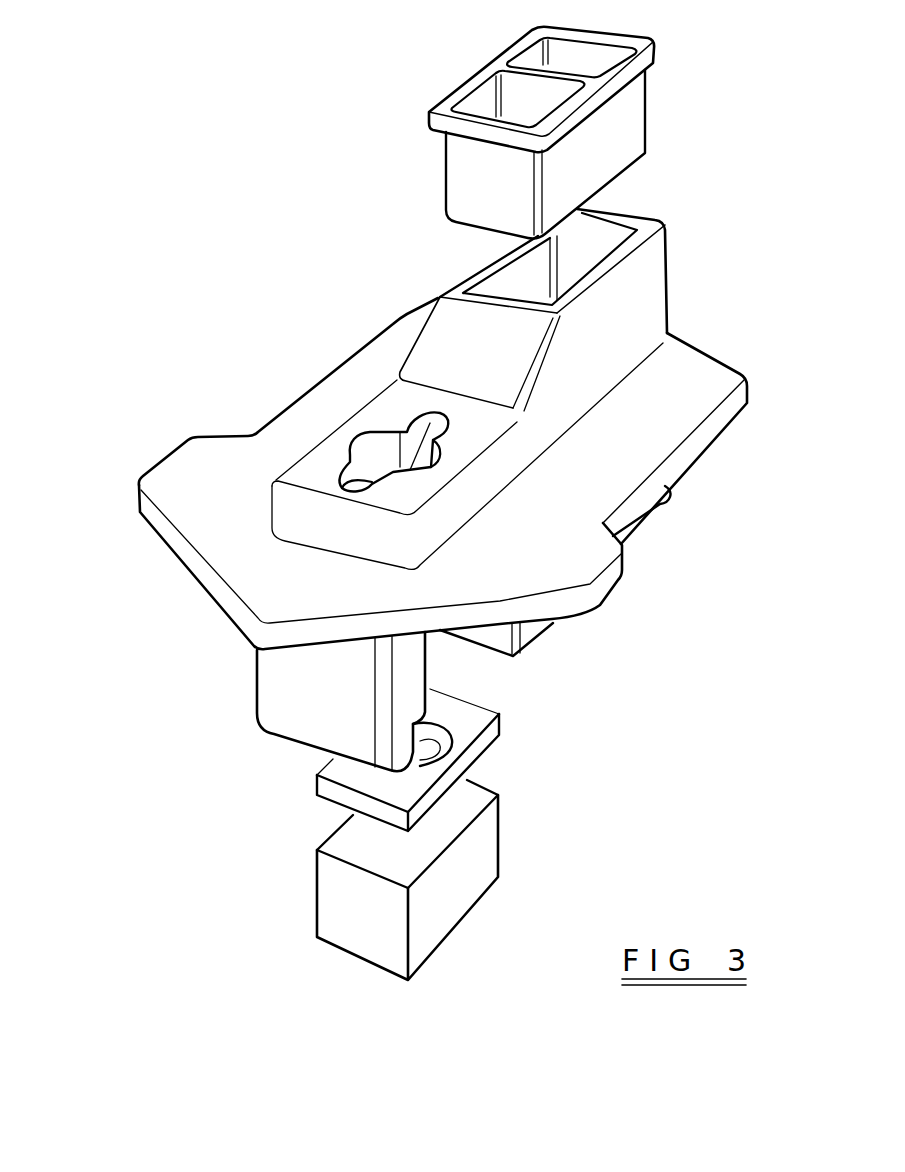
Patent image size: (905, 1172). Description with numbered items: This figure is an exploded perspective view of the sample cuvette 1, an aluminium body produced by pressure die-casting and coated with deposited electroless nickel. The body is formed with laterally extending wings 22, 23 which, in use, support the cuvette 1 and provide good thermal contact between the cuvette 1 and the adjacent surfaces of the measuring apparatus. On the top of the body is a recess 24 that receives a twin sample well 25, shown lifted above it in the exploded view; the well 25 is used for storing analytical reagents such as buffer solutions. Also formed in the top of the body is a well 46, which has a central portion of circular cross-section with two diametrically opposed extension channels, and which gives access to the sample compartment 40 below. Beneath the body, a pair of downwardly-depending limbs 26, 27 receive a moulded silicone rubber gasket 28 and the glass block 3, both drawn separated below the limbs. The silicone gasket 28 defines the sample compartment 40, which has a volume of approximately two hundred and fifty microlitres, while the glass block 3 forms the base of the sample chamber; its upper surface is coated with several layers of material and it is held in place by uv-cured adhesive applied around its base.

The sample cuvette 1 is at (130, 506).
The glass block 3 is at (500, 847).
The laterally extending wing 22 is at (353, 370).
The laterally extending wing 23 is at (664, 438).
The recess 24 is at (603, 245).
The twin sample well 25 is at (458, 173).
The downwardly-depending limb 26 is at (257, 708).
The downwardly-depending limb 27 is at (527, 632).
The silicone rubber gasket 28 is at (500, 728).
The sample compartment 40 is at (428, 733).
The well 46 is at (353, 452).